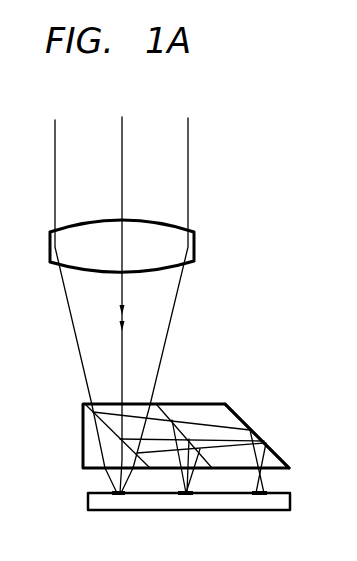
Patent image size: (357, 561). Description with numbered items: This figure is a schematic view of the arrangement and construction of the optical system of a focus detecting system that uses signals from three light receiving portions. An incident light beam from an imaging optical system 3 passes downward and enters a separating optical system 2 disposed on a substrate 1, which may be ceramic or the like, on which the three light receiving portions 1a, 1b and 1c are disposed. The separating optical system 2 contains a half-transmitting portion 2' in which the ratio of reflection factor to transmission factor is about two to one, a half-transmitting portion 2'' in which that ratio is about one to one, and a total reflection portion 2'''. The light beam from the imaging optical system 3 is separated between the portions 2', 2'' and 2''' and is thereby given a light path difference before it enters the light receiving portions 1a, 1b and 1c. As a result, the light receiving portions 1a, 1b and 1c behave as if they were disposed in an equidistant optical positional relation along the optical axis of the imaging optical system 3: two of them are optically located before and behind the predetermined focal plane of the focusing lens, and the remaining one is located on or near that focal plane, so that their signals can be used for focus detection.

The substrate 1 is at (207, 514).
The light receiving portion 1a is at (110, 510).
The light receiving portion 1b is at (185, 510).
The light receiving portion 1c is at (263, 510).
The separating optical system 2 is at (160, 423).
The half-transmitting portion 2' is at (91, 436).
The half-transmitting portion 2'' is at (184, 411).
The total reflection portion 2''' is at (257, 426).
The imaging optical system 3 is at (194, 241).